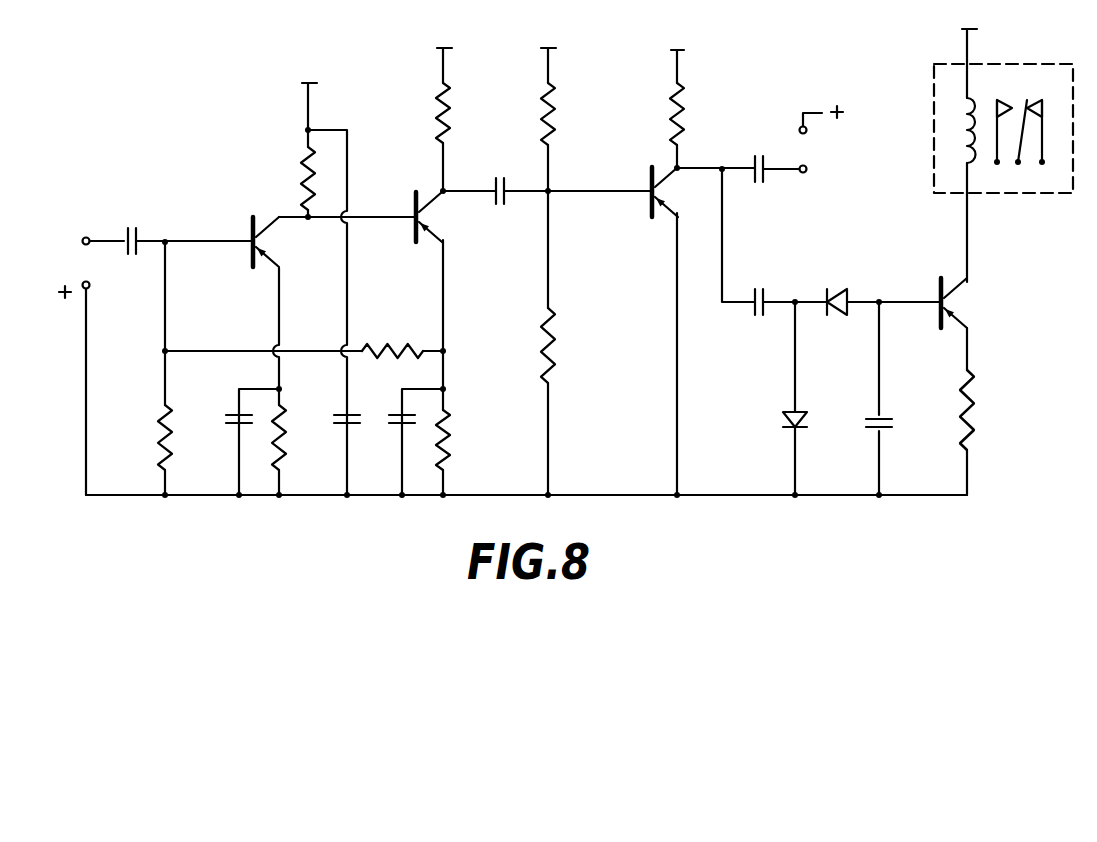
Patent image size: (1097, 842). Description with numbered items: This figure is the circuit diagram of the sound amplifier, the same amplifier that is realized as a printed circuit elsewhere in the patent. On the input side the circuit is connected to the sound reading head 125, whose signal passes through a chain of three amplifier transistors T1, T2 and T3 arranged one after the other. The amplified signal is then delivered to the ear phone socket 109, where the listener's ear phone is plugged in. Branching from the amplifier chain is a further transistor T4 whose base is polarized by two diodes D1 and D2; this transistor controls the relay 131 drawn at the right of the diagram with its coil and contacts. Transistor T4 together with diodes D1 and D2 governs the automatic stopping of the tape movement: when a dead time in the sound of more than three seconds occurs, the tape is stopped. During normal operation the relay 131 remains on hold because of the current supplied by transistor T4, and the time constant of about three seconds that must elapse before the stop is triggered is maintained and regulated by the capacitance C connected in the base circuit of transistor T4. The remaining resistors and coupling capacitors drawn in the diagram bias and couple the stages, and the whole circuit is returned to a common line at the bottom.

The sound reading head 125 is at (84, 248).
The ear phone socket 109 is at (803, 139).
The relay 131 is at (1017, 193).
The amplifier transistor T1 is at (280, 242).
The amplifier transistor T2 is at (440, 217).
The amplifier transistor T3 is at (677, 192).
The transistor T4 is at (966, 303).
The diode D1 is at (840, 290).
The diode D2 is at (803, 398).
The capacitance C is at (881, 398).